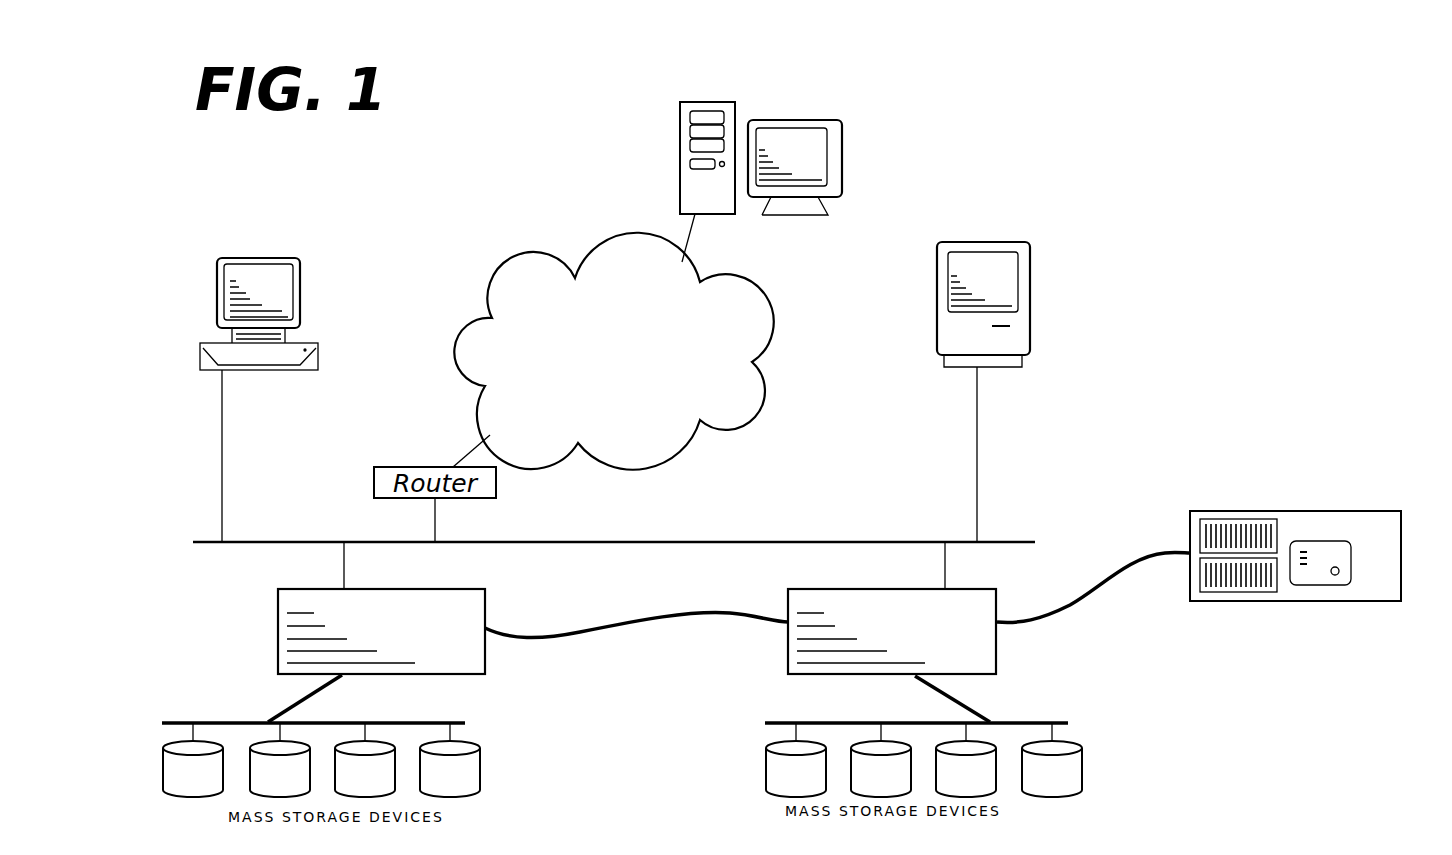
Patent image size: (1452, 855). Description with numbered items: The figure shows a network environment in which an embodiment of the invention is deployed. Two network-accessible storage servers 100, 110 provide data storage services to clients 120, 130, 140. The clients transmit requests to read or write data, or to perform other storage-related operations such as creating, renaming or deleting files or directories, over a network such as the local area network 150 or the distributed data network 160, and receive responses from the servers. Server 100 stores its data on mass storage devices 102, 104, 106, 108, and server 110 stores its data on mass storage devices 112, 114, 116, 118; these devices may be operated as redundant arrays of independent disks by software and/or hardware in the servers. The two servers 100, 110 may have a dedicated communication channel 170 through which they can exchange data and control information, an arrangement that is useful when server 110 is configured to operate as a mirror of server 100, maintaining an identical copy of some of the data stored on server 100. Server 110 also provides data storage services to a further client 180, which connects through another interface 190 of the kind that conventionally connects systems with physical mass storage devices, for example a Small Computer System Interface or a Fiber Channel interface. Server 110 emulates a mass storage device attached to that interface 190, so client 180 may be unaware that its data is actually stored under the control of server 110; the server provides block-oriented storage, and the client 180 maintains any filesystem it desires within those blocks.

The storage server 100 is at (381, 608).
The mass storage device 102 is at (194, 760).
The mass storage device 104 is at (281, 760).
The mass storage device 106 is at (366, 760).
The mass storage device 108 is at (451, 760).
The storage server 110 is at (892, 608).
The mass storage device 112 is at (797, 760).
The mass storage device 114 is at (882, 760).
The mass storage device 116 is at (967, 760).
The mass storage device 118 is at (1053, 760).
The client 120 is at (212, 372).
The client 130 is at (784, 118).
The client 140 is at (1015, 218).
The local area network 150 is at (240, 544).
The distributed data network 160 is at (683, 442).
The dedicated communication channel 170 is at (658, 622).
The client 180 is at (1395, 621).
The interface 190 is at (1097, 590).